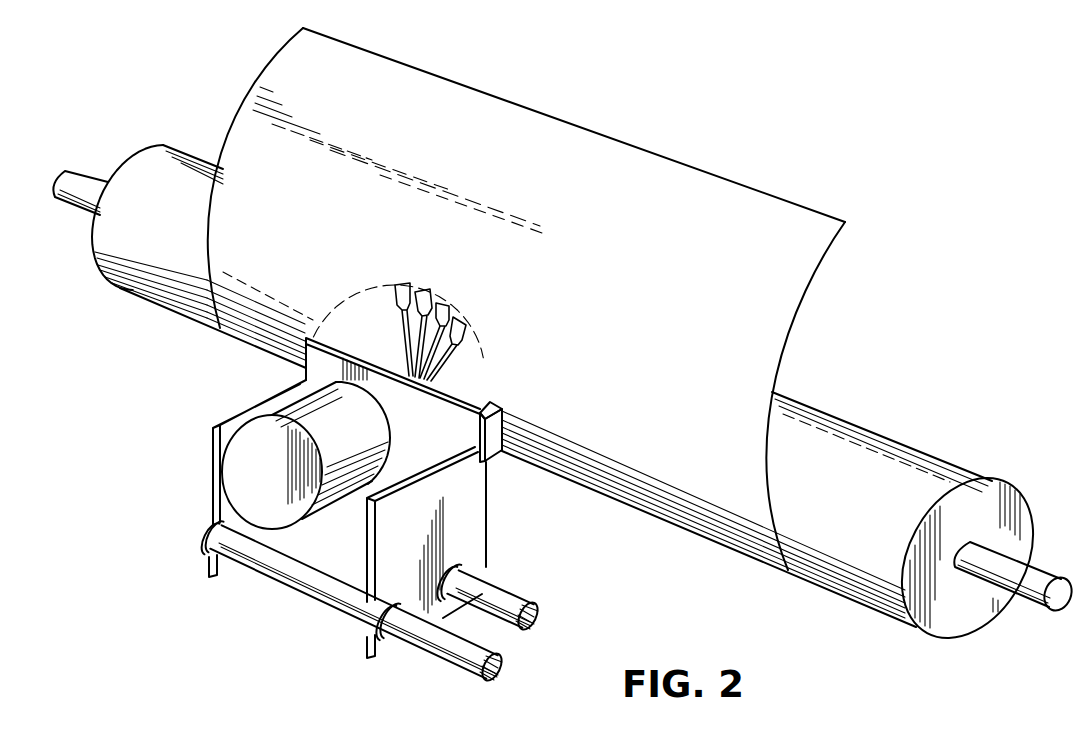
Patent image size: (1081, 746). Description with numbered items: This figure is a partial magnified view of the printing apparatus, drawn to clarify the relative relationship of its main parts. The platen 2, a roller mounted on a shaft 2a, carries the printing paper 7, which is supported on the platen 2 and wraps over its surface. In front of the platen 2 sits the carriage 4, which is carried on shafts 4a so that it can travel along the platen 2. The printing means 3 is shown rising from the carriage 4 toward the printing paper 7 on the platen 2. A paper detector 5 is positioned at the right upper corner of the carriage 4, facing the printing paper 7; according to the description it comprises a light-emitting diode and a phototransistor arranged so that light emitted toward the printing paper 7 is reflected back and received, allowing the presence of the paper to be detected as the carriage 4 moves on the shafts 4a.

The platen 2 is at (922, 448).
The shaft 2a is at (1052, 605).
The printing paper 7 is at (793, 301).
The carriage 4 is at (478, 527).
The shafts 4a is at (534, 627).
The paper detector 5 is at (503, 418).
The printing means 3 is at (425, 293).